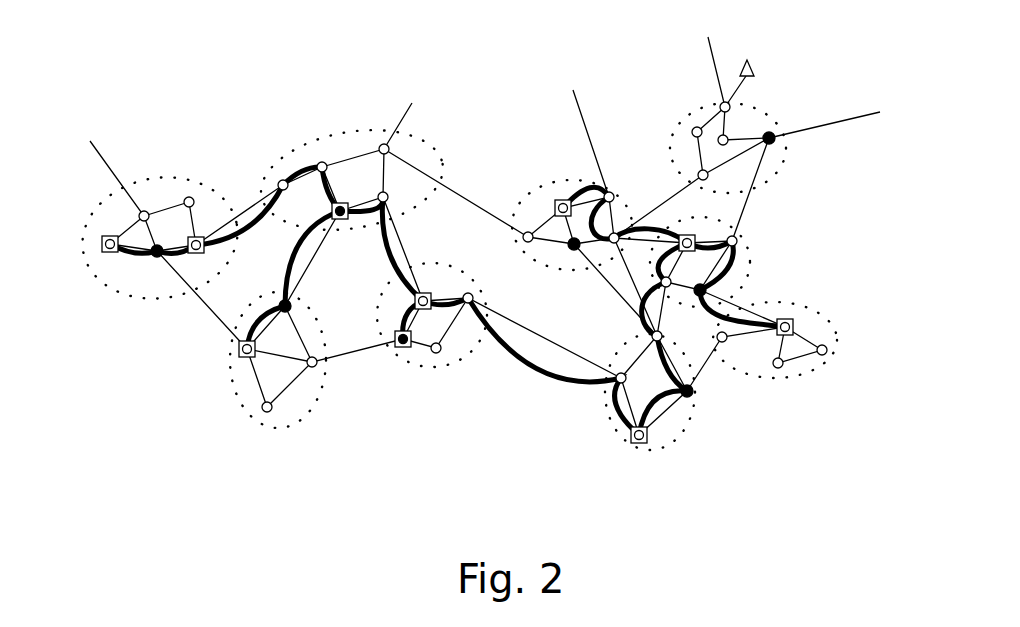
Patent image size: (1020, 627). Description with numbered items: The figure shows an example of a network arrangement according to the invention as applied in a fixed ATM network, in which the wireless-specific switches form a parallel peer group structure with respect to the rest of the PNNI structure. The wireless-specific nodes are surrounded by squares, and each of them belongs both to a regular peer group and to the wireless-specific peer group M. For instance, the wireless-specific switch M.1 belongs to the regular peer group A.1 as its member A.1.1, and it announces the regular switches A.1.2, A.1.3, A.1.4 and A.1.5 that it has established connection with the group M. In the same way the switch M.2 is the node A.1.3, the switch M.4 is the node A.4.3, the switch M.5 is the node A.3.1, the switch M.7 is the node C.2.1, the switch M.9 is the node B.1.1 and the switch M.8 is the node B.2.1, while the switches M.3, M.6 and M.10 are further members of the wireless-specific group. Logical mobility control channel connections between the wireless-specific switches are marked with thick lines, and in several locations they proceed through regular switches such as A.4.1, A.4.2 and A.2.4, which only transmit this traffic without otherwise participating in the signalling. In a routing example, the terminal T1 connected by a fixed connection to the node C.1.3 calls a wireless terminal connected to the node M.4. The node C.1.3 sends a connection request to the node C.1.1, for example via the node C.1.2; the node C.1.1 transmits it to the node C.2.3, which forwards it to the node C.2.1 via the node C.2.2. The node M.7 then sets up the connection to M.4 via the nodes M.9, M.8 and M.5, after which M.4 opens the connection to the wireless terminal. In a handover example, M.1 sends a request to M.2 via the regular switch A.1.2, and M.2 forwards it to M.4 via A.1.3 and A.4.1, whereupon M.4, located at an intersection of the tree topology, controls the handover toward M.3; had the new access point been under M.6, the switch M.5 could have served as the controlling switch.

The regular peer group A.1 is at (138, 178).
The wireless-specific switch M.1 is at (89, 278).
The member node of regular peer group A.1.1 is at (108, 254).
The regular switch A.1.2 is at (157, 258).
The wireless-specific switch M.2 is at (217, 272).
The regular switch A.1.3 is at (199, 253).
The regular switch A.1.4 is at (207, 193).
The regular switch A.1.5 is at (139, 215).
The regular switch A.4.1 is at (268, 172).
The regular switch A.4.2 is at (316, 166).
The wireless-specific switch M.4 is at (344, 243).
The regular peer group node A.4.3 is at (340, 220).
The regular switch A.2.4 is at (292, 306).
The wireless-specific switch M.3 is at (238, 349).
The wireless-specific switch M.5 is at (450, 271).
The regular peer group node A.3.1 is at (428, 294).
The wireless-specific switch M.6 is at (402, 347).
The wireless-specific switch M.7 is at (543, 169).
The regular peer group node C.2.1 is at (550, 200).
The regular switch C.2.2 is at (572, 250).
The regular switch C.2.3 is at (612, 245).
The regular switch C.1.1 is at (698, 174).
The regular switch C.1.2 is at (692, 131).
The regular switch C.1.3 is at (720, 104).
The terminal T1 is at (755, 67).
The wireless-specific switch M.9 is at (749, 226).
The regular peer group node B.1.1 is at (694, 237).
The wireless-specific switch M.8 is at (632, 468).
The regular peer group node B.2.1 is at (640, 444).
The wireless-specific switch M.10 is at (790, 318).